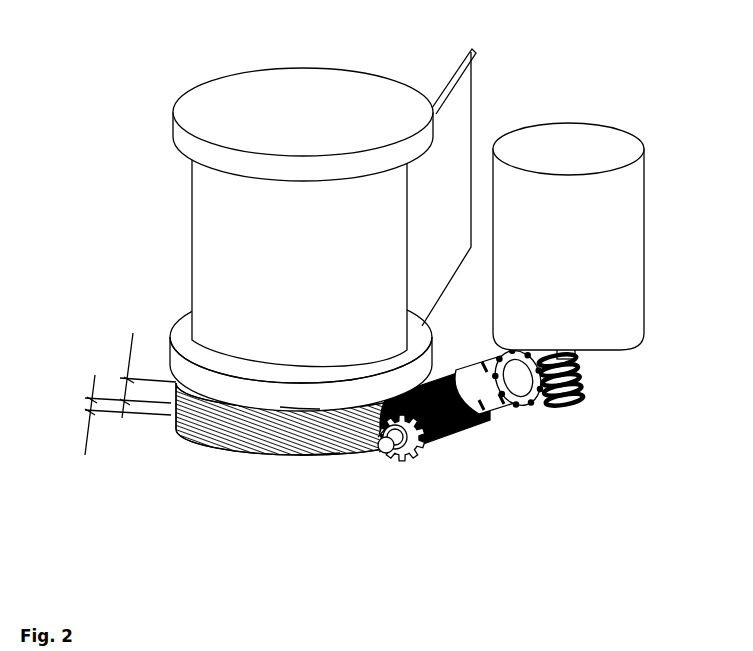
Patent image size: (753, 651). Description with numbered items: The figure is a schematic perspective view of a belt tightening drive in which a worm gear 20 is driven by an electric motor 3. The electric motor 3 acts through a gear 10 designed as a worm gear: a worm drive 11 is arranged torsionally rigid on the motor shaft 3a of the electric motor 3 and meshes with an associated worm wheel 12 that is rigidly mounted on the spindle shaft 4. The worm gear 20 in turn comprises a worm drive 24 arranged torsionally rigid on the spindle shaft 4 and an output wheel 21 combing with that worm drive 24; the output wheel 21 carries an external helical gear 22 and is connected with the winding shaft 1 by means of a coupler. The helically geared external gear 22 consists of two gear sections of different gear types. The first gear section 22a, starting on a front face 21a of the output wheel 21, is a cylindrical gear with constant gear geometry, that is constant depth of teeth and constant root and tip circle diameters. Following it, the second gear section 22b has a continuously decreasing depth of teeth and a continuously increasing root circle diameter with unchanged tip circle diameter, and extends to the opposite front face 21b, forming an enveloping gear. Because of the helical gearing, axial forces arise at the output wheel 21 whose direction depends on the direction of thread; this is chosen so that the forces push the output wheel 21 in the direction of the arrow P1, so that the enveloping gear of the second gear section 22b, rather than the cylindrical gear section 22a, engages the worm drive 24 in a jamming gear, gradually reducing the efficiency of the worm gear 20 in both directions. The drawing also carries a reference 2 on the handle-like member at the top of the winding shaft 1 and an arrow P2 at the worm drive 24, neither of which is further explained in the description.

The winding shaft 1 is at (207, 220).
The handle 2 is at (477, 57).
The electric motor 3 is at (612, 291).
The motor shaft 3a is at (575, 357).
The spindle shaft 4 is at (415, 465).
The gear 10 is at (545, 405).
The worm drive 11 is at (587, 402).
The worm wheel 12 is at (505, 349).
The worm gear 20 is at (373, 457).
The output wheel 21 is at (252, 457).
The front face 21a is at (290, 405).
The opposite front face 21b is at (320, 457).
The external helical gear 22 is at (177, 427).
The first gear section 22a is at (130, 375).
The second gear section 22b is at (314, 458).
The worm drive 24 is at (457, 445).
The arrow P1 is at (300, 405).
The direction arrow P2 is at (387, 447).